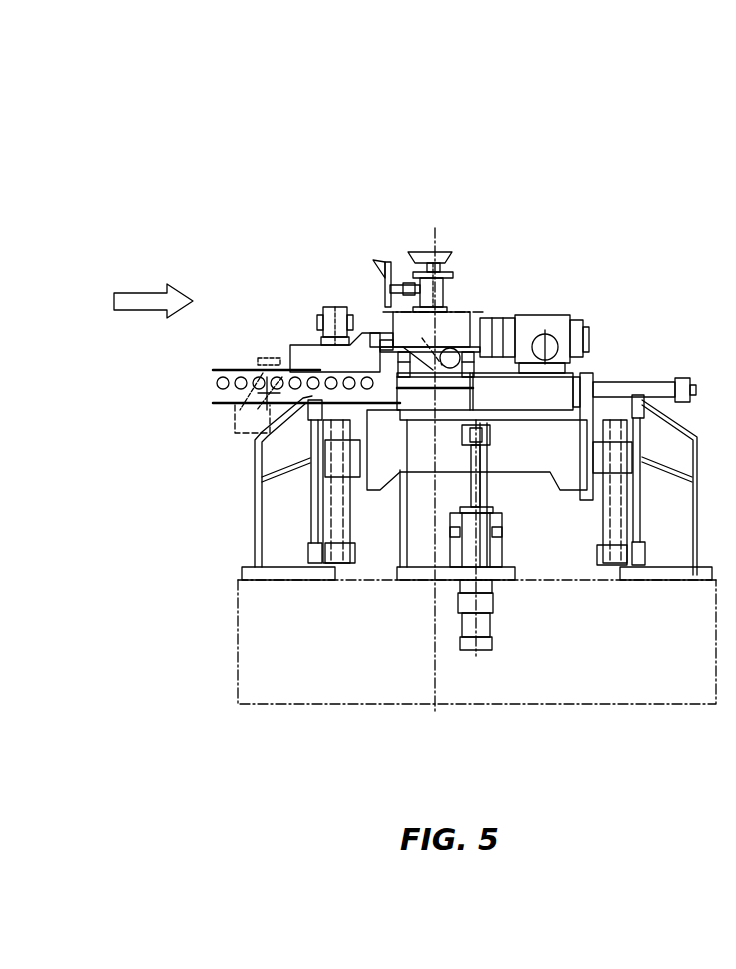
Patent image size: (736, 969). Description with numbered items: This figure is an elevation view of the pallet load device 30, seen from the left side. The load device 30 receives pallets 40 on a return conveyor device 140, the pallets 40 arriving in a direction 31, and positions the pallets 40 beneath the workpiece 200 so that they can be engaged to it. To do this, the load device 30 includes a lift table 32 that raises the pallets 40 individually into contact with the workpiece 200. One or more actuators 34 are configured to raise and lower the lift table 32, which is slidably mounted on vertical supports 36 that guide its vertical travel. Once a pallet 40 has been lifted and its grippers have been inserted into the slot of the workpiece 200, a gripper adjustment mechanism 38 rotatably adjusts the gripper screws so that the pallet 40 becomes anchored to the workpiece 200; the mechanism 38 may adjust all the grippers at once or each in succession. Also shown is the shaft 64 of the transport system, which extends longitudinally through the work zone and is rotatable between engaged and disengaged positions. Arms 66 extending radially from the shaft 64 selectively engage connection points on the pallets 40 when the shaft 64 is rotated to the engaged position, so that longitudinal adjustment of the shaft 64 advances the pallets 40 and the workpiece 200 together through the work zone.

The pallet load device 30 is at (616, 158).
The direction 31 is at (143, 290).
The lift table 32 is at (527, 423).
The actuators 34 is at (460, 593).
The vertical supports 36 is at (326, 508).
The gripper adjustment mechanism 38 is at (374, 250).
The pallets 40 is at (476, 318).
The shaft 64 is at (510, 365).
The arms 66 is at (449, 358).
The return conveyor device 140 is at (222, 410).
The workpiece 200 is at (420, 250).